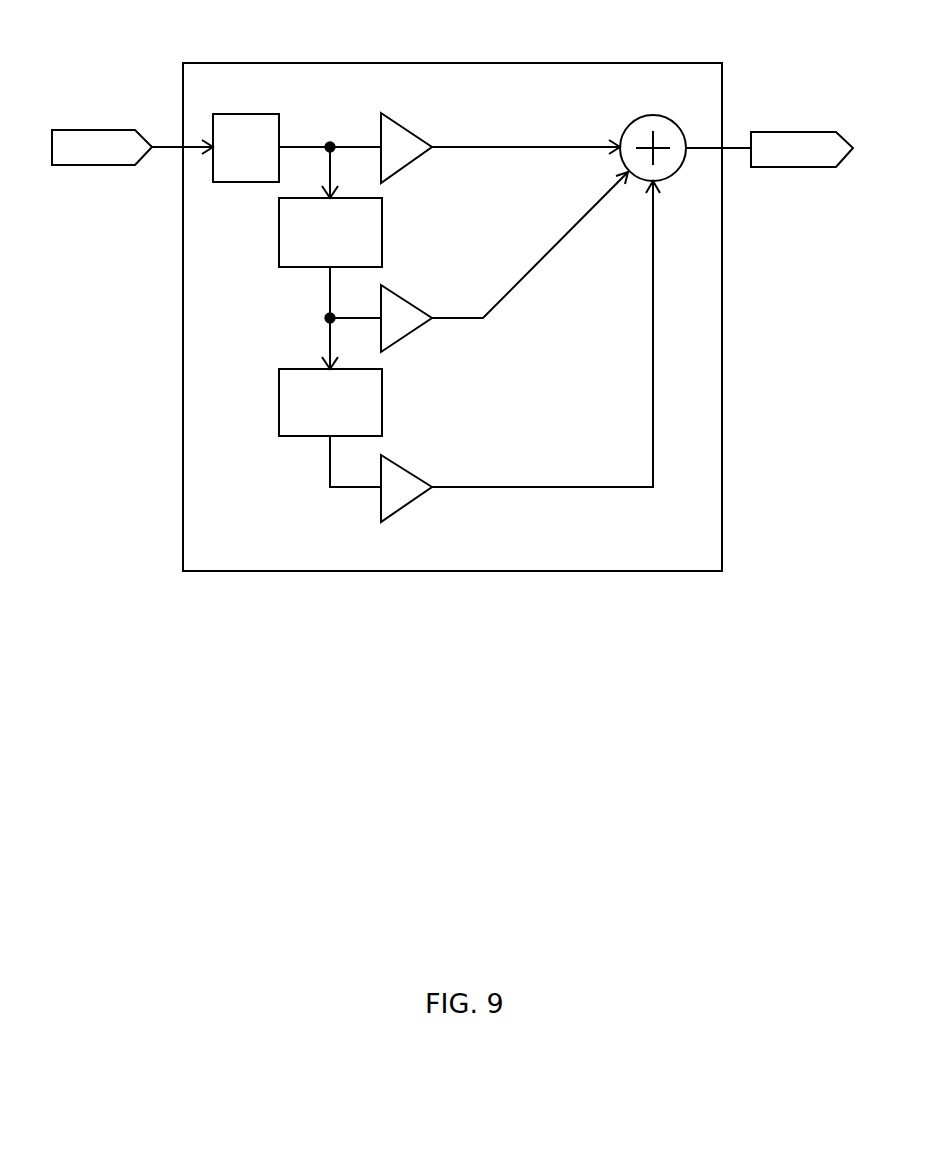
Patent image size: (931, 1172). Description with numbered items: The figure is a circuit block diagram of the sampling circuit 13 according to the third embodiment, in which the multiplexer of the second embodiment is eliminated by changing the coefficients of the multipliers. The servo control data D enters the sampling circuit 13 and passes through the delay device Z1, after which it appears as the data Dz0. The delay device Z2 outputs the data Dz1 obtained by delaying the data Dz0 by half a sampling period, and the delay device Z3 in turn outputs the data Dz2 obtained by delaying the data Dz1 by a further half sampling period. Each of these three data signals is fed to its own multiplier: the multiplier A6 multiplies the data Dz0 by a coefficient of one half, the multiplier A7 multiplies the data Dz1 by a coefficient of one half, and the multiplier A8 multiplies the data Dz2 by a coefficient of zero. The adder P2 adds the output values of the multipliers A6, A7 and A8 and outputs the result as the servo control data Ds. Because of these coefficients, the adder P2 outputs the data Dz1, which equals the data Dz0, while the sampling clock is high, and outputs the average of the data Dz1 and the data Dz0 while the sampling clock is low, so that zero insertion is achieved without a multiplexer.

The sampling circuit 13 is at (448, 63).
The servo control data D is at (102, 132).
The servo control data Ds is at (802, 133).
The delay device Z1 is at (248, 114).
The delay device Z2 is at (382, 228).
The delay device Z3 is at (382, 398).
The data Dz0 is at (328, 134).
The data Dz1 is at (310, 318).
The data Dz2 is at (333, 461).
The multiplier A6 is at (383, 113).
The multiplier A7 is at (383, 285).
The multiplier A8 is at (383, 455).
The adder P2 is at (653, 115).